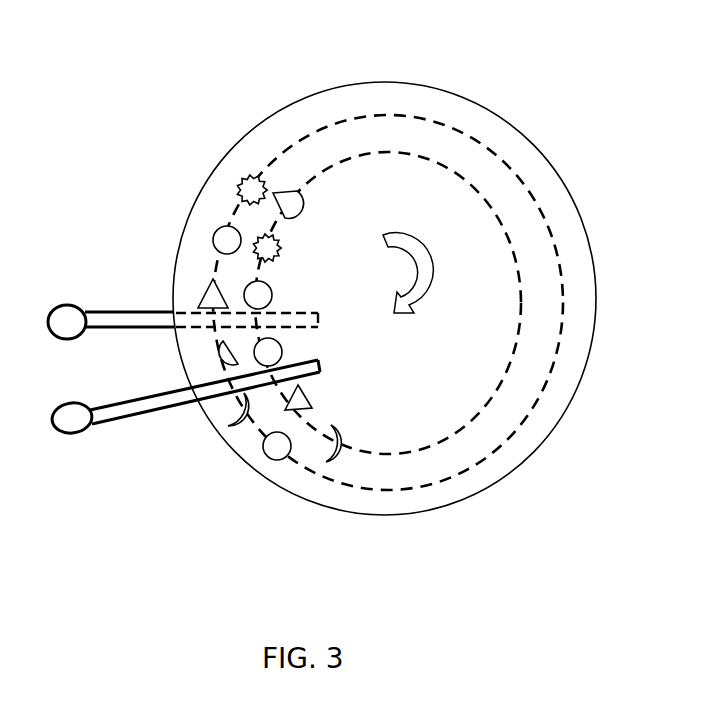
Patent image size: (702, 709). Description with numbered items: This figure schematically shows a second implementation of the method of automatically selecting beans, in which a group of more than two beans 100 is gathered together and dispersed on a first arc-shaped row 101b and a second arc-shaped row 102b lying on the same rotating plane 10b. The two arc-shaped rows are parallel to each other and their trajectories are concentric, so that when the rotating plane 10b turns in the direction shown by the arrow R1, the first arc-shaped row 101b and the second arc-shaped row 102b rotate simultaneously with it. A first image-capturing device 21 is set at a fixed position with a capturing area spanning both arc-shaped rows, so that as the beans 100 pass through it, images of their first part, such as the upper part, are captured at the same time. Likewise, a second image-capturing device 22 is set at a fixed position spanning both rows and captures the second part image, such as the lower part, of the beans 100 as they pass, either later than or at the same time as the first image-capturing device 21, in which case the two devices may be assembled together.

The rotating plane 10b is at (437, 83).
The first arc-shaped row 101b is at (387, 490).
The second arc-shaped row 102b is at (387, 455).
The beans 100 is at (250, 180).
The second image-capturing device 22 is at (49, 318).
The first image-capturing device 21 is at (53, 427).
The arrow R1 (rotation of the rotating plane) R1 is at (393, 286).